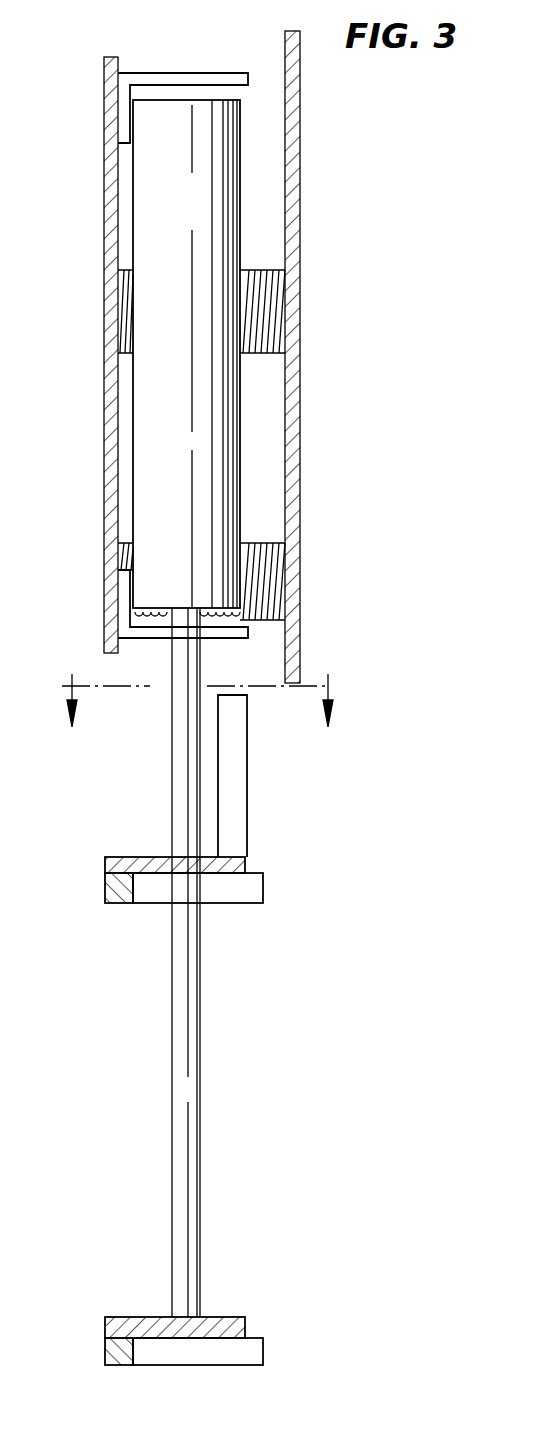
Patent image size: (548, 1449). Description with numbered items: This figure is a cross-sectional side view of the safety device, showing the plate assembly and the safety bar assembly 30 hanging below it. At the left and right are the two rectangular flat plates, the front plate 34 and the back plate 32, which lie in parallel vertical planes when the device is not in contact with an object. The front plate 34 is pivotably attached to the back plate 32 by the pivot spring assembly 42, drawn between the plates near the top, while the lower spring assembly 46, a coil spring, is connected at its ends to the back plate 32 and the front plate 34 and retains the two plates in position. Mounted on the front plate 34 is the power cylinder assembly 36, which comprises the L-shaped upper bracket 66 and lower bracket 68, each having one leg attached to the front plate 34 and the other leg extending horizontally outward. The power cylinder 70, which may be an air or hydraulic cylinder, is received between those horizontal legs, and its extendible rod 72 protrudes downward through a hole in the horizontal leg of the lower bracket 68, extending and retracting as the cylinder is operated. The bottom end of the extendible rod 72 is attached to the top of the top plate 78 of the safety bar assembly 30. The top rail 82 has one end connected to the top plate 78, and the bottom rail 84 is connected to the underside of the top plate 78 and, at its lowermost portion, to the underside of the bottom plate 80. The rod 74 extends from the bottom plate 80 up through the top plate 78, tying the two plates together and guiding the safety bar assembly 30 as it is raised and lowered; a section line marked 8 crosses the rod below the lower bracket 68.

The safety bar assembly 30 is at (268, 888).
The back plate 32 is at (300, 242).
The front plate 34 is at (108, 283).
The power cylinder assembly 36 is at (241, 412).
The pivot spring assembly 42 is at (256, 271).
The lower spring assembly 46 is at (272, 598).
The upper bracket 66 is at (180, 73).
The lower bracket 68 is at (212, 635).
The power cylinder 70 is at (203, 218).
The extendible rod 72 is at (182, 793).
The rod 74 is at (190, 1120).
The top plate 78 is at (125, 860).
The bottom plate 80 is at (118, 1318).
The top rail 82 is at (236, 800).
The bottom rail 84 is at (248, 893).
The section line 8- 8 is at (201, 705).